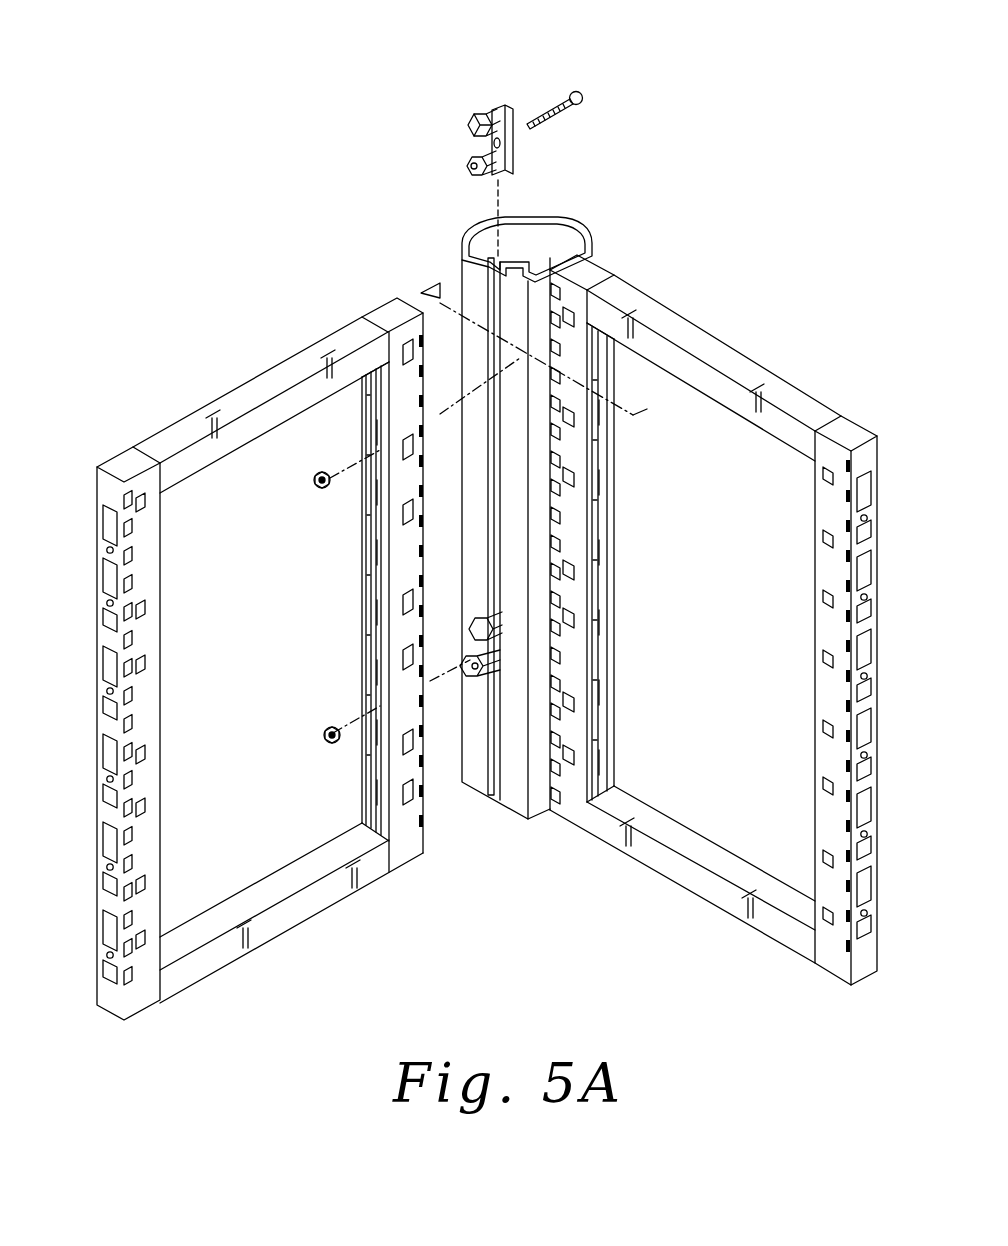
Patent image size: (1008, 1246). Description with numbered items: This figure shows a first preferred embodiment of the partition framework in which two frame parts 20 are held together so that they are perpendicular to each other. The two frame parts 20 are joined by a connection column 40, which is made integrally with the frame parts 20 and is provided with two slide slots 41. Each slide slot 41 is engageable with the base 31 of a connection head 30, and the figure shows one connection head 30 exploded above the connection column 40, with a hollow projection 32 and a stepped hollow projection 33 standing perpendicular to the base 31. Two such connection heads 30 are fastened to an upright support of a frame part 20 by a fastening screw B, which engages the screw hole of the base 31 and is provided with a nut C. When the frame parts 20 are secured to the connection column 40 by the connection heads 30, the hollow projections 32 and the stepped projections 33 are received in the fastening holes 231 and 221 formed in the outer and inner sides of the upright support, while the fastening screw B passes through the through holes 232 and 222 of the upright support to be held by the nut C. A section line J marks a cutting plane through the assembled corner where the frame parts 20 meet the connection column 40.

The frame part 20 is at (262, 394).
The fastening hole 221 is at (375, 414).
The through hole 222 is at (378, 520).
The fastening hole 231 is at (102, 518).
The through hole 232 is at (106, 550).
The connection head 30 is at (491, 70).
The base 31 is at (511, 130).
The hollow projection 32 is at (479, 118).
The stepped hollow projection 33 is at (490, 173).
The connection column 40 is at (548, 233).
The slide slot 41 is at (490, 285).
The fastening screw B is at (573, 106).
The nut C is at (313, 481).
The section line J- J is at (437, 310).